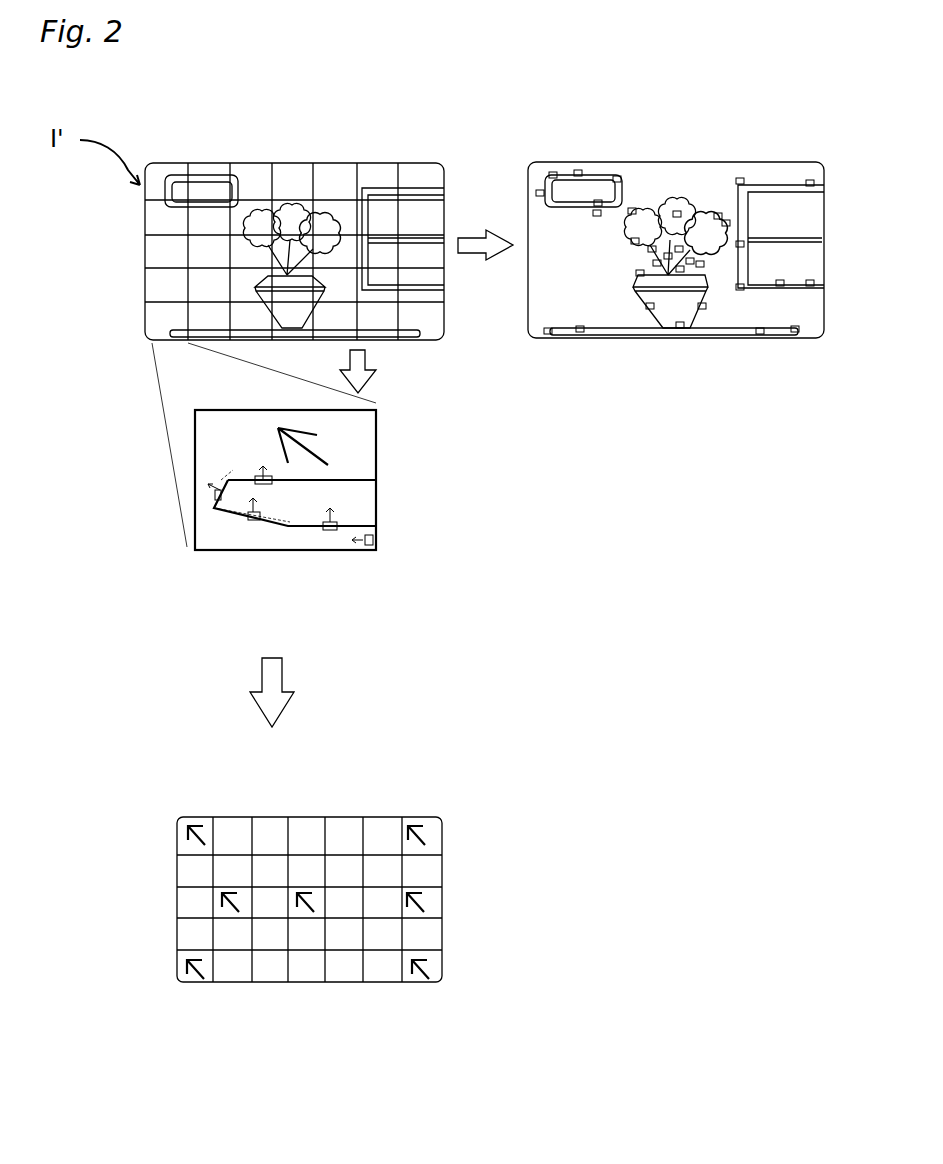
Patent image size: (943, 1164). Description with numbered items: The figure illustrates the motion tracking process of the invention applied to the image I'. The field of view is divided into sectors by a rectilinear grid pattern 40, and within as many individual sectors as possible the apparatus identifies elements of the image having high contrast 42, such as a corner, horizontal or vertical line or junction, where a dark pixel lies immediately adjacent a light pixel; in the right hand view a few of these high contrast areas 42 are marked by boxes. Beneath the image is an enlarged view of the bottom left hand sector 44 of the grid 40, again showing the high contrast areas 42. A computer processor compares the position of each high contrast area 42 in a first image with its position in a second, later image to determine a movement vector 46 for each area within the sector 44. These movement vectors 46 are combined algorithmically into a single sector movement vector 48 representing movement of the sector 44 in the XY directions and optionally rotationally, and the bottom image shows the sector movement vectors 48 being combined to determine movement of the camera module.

The rectilinear grid pattern 40 is at (325, 195).
The high contrast areas 42 is at (548, 340).
The bottom left hand sector 44 is at (150, 323).
The movement vector 46 is at (345, 515).
The sector movement vector 48 is at (268, 440).